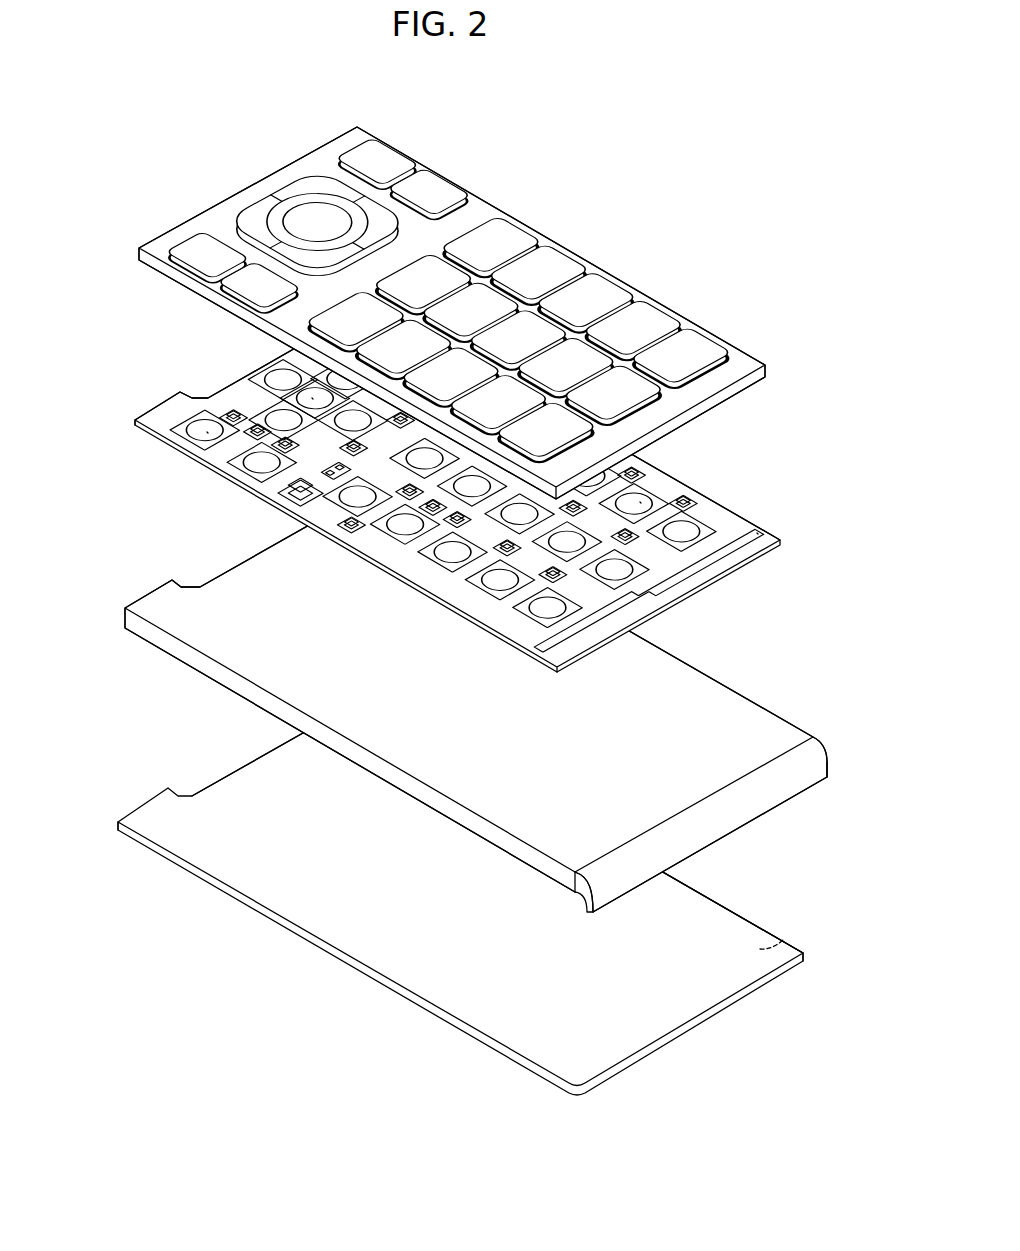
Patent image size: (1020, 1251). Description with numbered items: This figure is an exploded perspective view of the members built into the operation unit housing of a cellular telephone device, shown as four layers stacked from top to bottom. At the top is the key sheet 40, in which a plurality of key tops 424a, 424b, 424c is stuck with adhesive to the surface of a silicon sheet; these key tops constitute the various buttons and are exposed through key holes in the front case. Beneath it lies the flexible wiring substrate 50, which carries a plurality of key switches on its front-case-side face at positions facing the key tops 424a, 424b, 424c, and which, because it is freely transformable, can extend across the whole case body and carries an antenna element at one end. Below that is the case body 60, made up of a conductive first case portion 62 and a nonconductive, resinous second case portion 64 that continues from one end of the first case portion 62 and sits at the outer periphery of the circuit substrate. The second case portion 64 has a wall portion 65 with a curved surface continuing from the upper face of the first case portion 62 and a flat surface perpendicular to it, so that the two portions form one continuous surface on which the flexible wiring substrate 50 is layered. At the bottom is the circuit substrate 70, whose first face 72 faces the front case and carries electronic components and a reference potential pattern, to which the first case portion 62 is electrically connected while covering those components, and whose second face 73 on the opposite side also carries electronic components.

The key sheet 40 is at (147, 214).
The key top 424a is at (440, 186).
The key top 424b is at (606, 294).
The key top 424c is at (318, 198).
The flexible wiring substrate 50 is at (147, 402).
The case body 60 is at (147, 592).
The first case portion 62 is at (717, 703).
The second case portion 64 is at (813, 737).
The wall portion 65 is at (826, 756).
The circuit substrate 70 is at (147, 782).
The first face 72 is at (704, 905).
The second face 73 is at (781, 946).